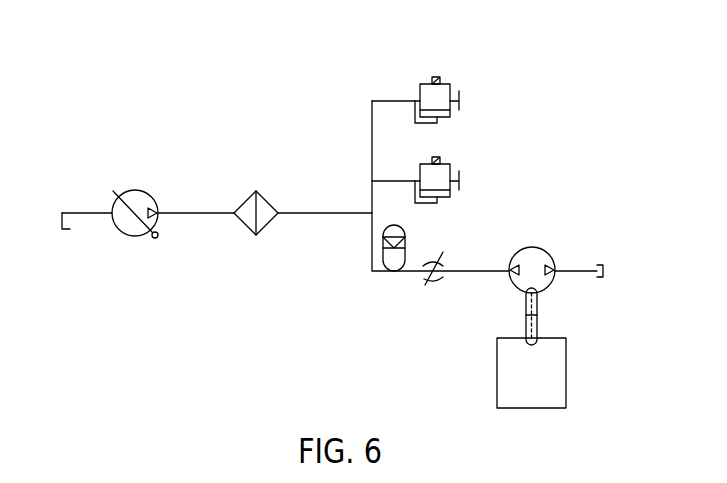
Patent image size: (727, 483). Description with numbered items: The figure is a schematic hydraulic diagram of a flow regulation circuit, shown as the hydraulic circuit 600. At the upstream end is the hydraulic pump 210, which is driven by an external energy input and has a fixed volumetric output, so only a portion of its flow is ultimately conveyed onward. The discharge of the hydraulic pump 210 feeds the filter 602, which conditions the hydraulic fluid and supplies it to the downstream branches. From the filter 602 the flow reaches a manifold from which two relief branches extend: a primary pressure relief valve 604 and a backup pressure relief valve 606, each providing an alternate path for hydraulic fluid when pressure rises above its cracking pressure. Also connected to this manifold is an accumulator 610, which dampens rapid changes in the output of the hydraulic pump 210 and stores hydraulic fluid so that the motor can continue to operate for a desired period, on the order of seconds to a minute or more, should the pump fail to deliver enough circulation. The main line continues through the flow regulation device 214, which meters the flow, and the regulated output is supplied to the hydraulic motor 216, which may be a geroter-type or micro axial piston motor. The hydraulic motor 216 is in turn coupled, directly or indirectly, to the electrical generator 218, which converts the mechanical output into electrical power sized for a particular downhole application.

The hydraulic circuit 600 is at (116, 50).
The hydraulic pump 210 is at (131, 190).
The filter 602 is at (255, 192).
The primary pressure relief valve 604 is at (451, 84).
The backup pressure relief valve 606 is at (451, 164).
The accumulator 610 is at (376, 273).
The flow regulation device 214 is at (450, 293).
The hydraulic motor 216 is at (539, 248).
The electrical generator 218 is at (568, 377).